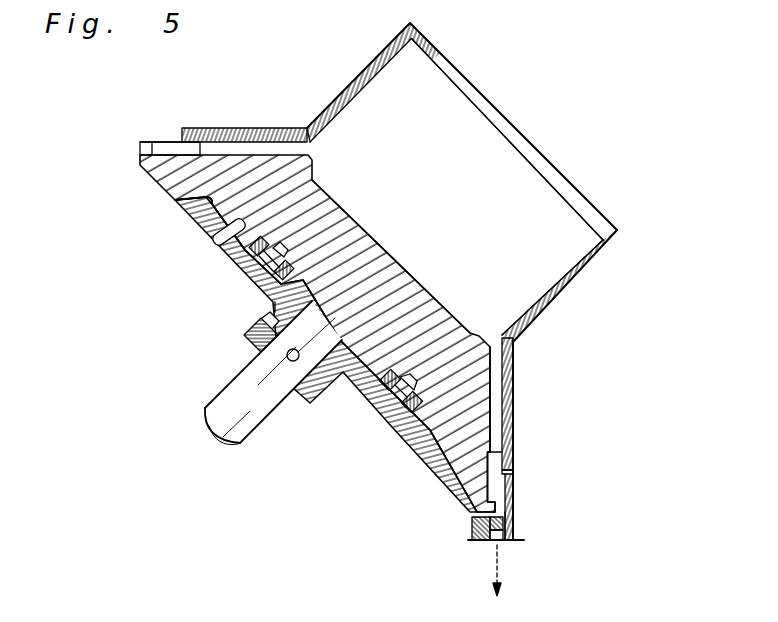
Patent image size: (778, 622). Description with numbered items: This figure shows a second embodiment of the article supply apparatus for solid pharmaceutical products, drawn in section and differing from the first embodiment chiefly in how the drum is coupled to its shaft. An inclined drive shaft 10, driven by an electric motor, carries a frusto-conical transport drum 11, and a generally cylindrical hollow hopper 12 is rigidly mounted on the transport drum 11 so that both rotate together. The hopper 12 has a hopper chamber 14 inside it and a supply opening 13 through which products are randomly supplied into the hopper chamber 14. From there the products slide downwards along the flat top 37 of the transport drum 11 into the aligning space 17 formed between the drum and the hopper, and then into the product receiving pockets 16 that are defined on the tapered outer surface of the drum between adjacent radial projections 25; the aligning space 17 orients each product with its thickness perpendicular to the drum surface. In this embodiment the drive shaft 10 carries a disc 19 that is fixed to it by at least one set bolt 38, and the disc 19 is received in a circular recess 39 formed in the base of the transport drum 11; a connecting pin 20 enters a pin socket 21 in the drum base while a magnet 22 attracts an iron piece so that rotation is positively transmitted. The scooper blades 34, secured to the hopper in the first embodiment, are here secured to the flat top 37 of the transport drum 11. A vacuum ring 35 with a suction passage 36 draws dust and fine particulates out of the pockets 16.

The drive shaft 10 is at (248, 407).
The transport drum 11 is at (460, 462).
The hopper 12 is at (560, 295).
The supply opening 13 is at (497, 117).
The hopper chamber 14 is at (517, 242).
The product receiving pockets 16 is at (493, 480).
The aligning space 17 is at (493, 393).
The disc 19 is at (262, 283).
The connecting pin 20 is at (212, 245).
The pin socket 21 is at (305, 205).
The magnet 22 is at (410, 418).
The radial projections 25 is at (495, 495).
The scooper blades 34 is at (312, 155).
The vacuum ring 35 is at (510, 542).
The suction passage 36 is at (480, 543).
The flat top 37 is at (382, 250).
The set bolt 38 is at (255, 322).
The circular recess 39 is at (176, 199).